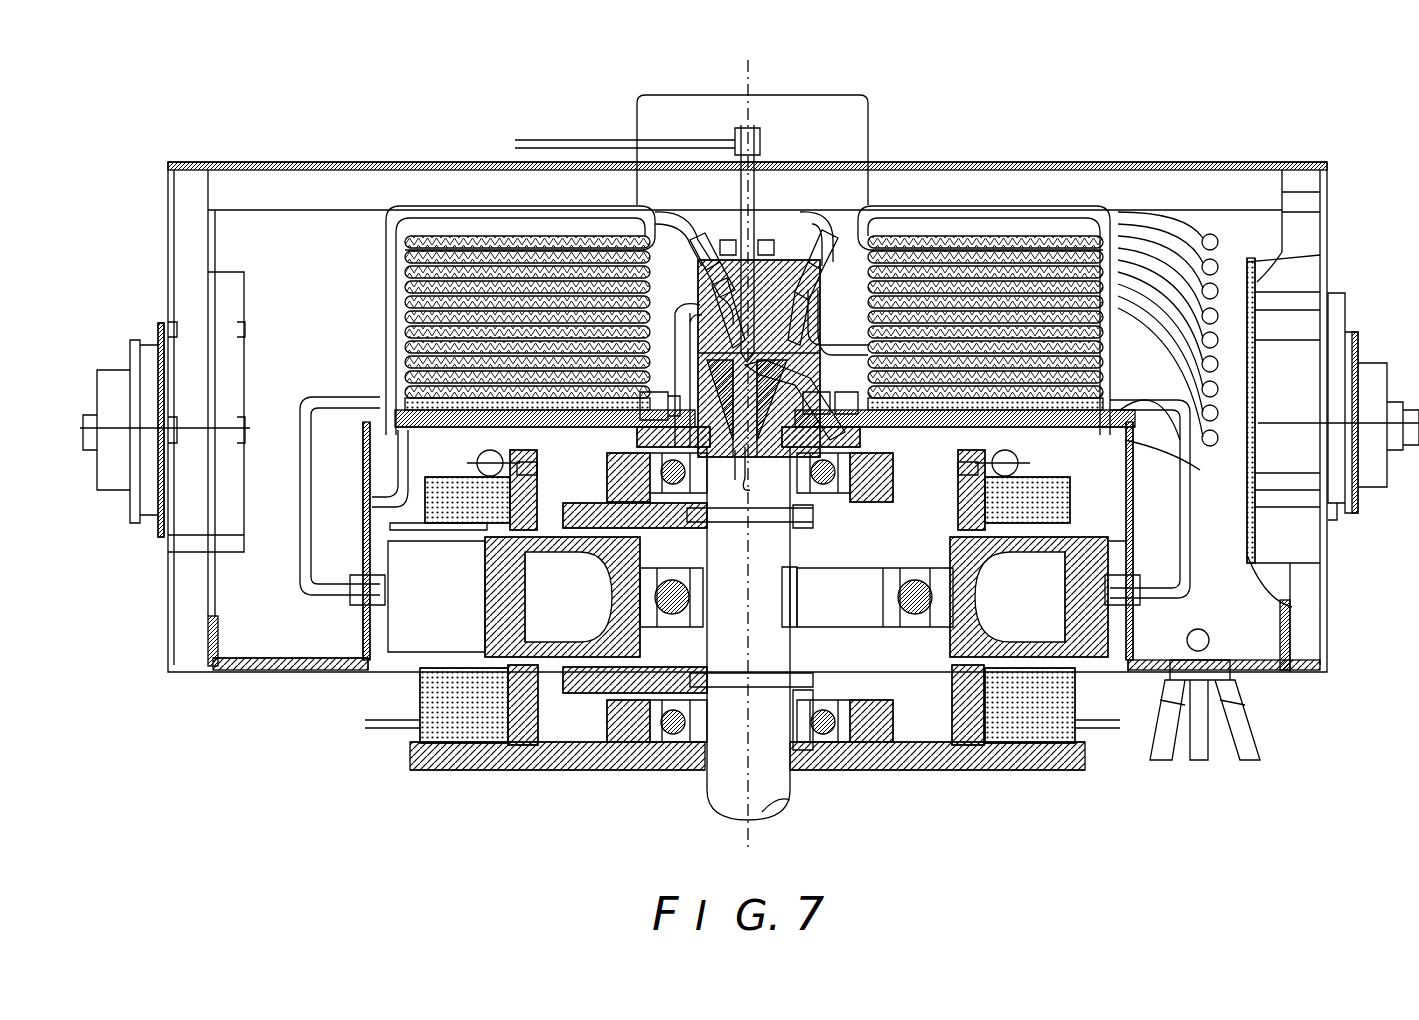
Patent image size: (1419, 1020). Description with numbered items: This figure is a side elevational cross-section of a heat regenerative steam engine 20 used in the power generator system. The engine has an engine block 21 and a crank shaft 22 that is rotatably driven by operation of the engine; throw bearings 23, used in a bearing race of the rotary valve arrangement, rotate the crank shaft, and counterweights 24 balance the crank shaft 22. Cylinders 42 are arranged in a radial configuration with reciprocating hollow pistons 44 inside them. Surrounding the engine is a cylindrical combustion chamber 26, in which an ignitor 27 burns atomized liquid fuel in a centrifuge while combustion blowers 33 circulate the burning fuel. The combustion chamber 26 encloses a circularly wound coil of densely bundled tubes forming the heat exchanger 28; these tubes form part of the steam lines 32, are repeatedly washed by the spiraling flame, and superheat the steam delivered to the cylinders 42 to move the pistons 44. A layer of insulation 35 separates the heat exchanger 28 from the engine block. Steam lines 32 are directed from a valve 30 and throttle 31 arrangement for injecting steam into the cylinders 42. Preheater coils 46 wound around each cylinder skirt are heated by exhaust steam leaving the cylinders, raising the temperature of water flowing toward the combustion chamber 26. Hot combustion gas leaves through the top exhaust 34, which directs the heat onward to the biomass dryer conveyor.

The heat regenerative steam engine 20 is at (749, 440).
The engine block 21 is at (950, 690).
The crank shaft 22 is at (725, 775).
The throw bearings 23 is at (684, 548).
The counterweights 24 is at (592, 512).
The combustion chamber 26 is at (307, 327).
The ignitor 27 is at (1225, 740).
The heat exchanger 28 is at (480, 285).
The valve 30 is at (758, 475).
The throttle 31 is at (750, 205).
The steam lines 32 is at (295, 580).
The combustion blowers 33 is at (188, 378).
The exhaust 34 is at (685, 115).
The insulation 35 is at (432, 410).
The cylinders 42 is at (458, 530).
The hollow pistons 44 is at (545, 622).
The preheater coils 46 is at (470, 695).